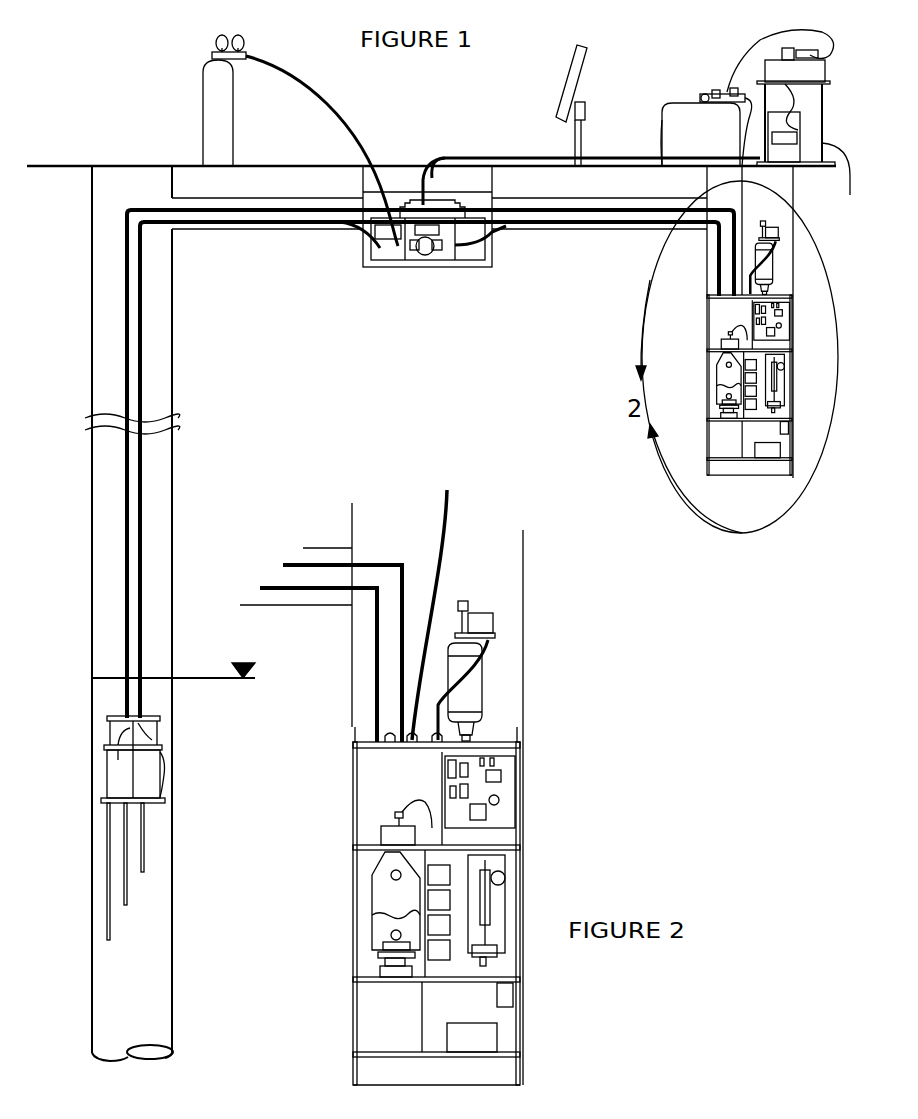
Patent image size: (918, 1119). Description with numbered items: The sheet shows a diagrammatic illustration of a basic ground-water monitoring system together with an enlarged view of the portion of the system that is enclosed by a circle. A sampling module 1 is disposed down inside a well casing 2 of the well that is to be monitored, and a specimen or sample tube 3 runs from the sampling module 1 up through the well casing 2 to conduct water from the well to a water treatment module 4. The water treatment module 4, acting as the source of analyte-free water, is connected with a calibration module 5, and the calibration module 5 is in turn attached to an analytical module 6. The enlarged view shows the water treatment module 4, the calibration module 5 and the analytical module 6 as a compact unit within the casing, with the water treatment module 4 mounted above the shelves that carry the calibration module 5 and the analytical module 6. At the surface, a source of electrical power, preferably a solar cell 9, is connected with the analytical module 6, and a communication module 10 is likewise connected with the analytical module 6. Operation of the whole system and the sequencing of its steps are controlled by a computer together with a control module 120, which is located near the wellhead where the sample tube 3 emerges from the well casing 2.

In FIG. 1, the sampling module 1 is at (148, 778).
In FIG. 1, the well casing 2 is at (174, 498).
In FIG. 1, the sample tube 3 is at (142, 297).
In FIG. 2, the water treatment module 4 is at (482, 683).
In FIG. 1, the calibration module 5 is at (698, 364).
In FIG. 2, the calibration module 5 is at (530, 838).
In FIG. 2, the analytical module 6 is at (500, 910).
In FIG. 1, the solar cell 9 is at (585, 62).
In FIG. 1, the communication module 10 is at (809, 128).
In FIG. 1, the control module 120 is at (492, 250).